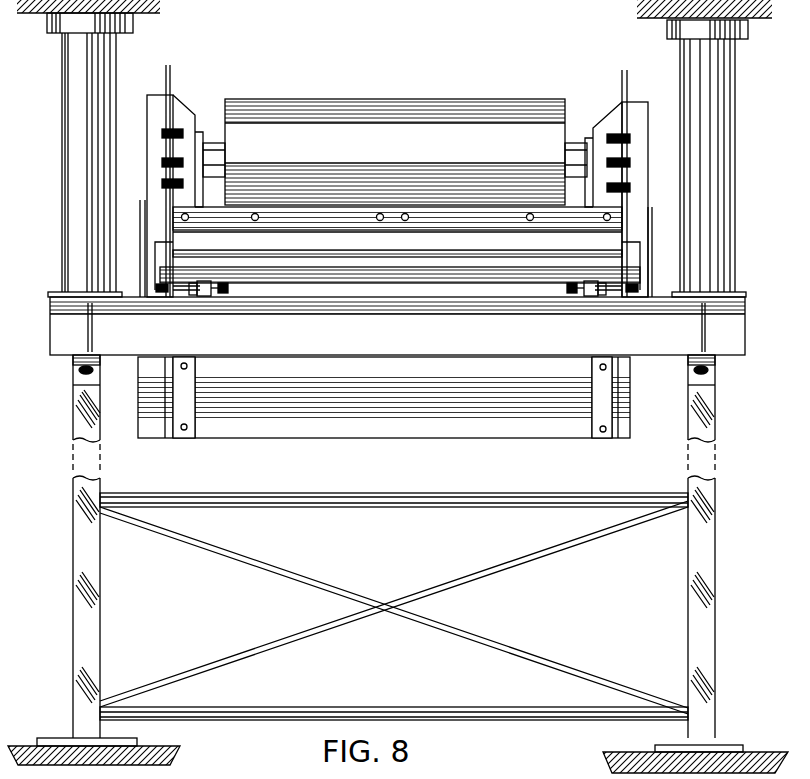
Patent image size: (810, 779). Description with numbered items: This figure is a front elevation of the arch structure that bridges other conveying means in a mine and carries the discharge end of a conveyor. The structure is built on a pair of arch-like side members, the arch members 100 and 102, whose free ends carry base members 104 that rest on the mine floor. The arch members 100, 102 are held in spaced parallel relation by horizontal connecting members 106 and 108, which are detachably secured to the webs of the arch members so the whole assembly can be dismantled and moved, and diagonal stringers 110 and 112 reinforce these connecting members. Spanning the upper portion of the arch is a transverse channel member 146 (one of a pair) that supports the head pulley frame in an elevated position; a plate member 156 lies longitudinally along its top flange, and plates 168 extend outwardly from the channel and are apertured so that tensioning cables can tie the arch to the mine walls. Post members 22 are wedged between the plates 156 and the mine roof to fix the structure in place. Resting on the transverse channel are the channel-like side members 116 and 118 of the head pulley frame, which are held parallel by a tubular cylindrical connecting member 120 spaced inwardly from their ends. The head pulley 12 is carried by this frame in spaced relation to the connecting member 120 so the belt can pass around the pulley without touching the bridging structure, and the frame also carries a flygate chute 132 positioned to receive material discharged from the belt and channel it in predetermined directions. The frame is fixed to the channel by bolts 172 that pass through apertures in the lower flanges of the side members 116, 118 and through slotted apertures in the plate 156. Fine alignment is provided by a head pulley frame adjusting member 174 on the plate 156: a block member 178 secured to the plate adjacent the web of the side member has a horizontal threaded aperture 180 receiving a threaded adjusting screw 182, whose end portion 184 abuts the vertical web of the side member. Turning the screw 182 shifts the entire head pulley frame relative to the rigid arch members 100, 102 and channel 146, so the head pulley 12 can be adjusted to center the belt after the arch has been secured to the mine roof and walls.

The head pulley 12 is at (428, 99).
The post member 22 is at (62, 99).
The arch member 100 is at (715, 405).
The arch member 102 is at (73, 413).
The base member 104 is at (48, 738).
The horizontal connecting member 106 is at (368, 493).
The horizontal connecting member 108 is at (372, 707).
The diagonal stringer 110 is at (277, 567).
The diagonal stringer 112 is at (262, 651).
The channel like side member 116 is at (635, 240).
The channel like side member 118 is at (160, 238).
The tubular cylindrical connecting member 120 is at (370, 250).
The flygate chute 132 is at (402, 374).
The channel member 146 is at (50, 340).
The plate member 156 is at (392, 300).
The plate 168 is at (92, 315).
The bolt 172 is at (156, 282).
The head pulley frame adjusting member 174 is at (211, 320).
The block member 178 is at (208, 298).
The horizontal threaded aperture 180 is at (195, 298).
The threaded adjusting screw 182 is at (228, 288).
The end portion 184 is at (178, 296).